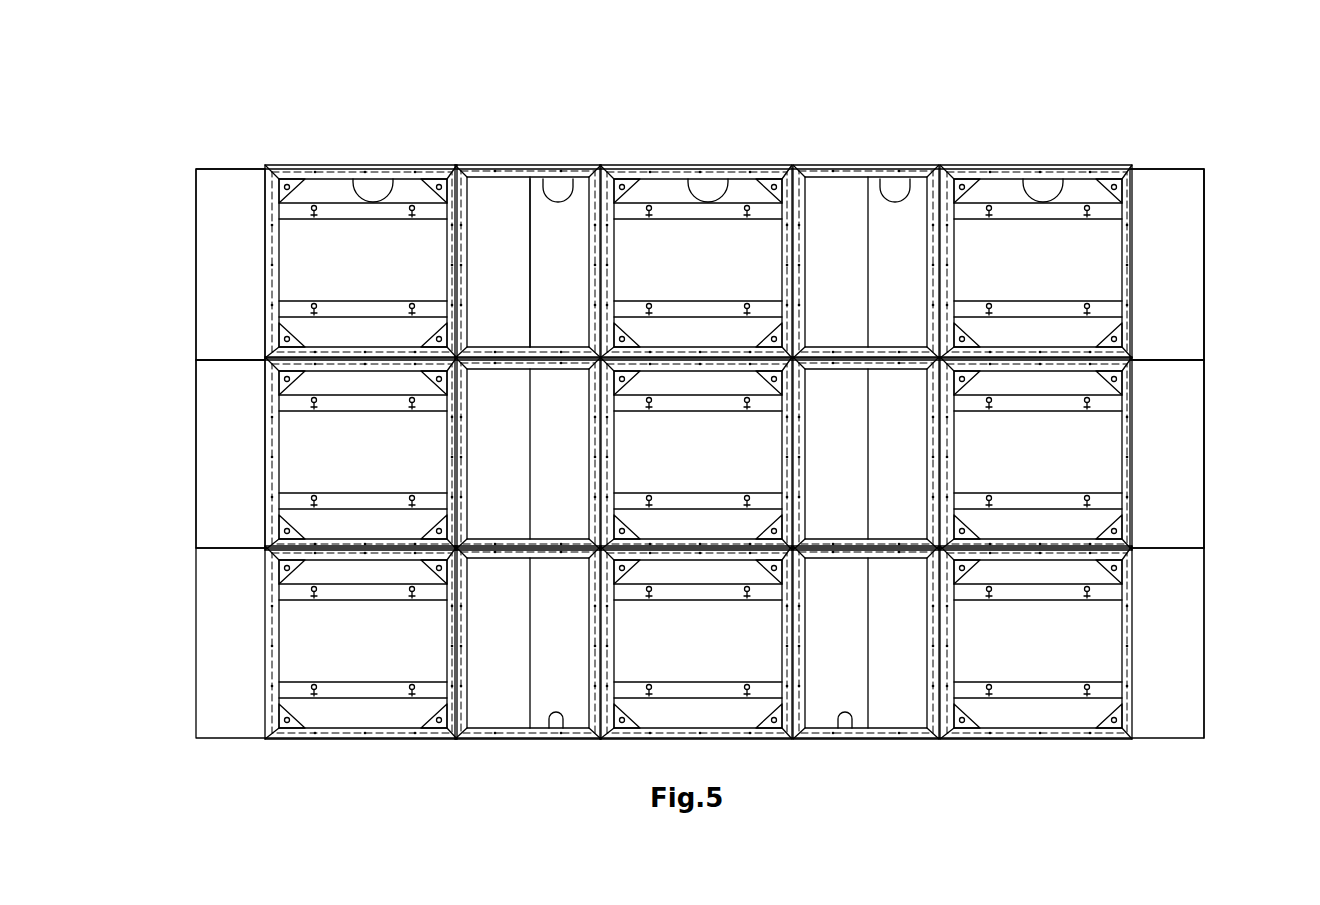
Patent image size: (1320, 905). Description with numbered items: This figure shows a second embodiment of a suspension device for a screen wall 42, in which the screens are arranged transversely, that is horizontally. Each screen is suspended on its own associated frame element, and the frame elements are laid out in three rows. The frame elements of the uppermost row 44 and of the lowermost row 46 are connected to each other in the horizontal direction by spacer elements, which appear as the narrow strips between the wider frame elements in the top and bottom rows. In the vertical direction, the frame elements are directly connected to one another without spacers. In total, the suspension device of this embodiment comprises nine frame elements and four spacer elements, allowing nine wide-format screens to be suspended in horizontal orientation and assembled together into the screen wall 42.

The screen wall 42 is at (977, 138).
The uppermost row 44 is at (1220, 275).
The lowermost row 46 is at (1218, 667).